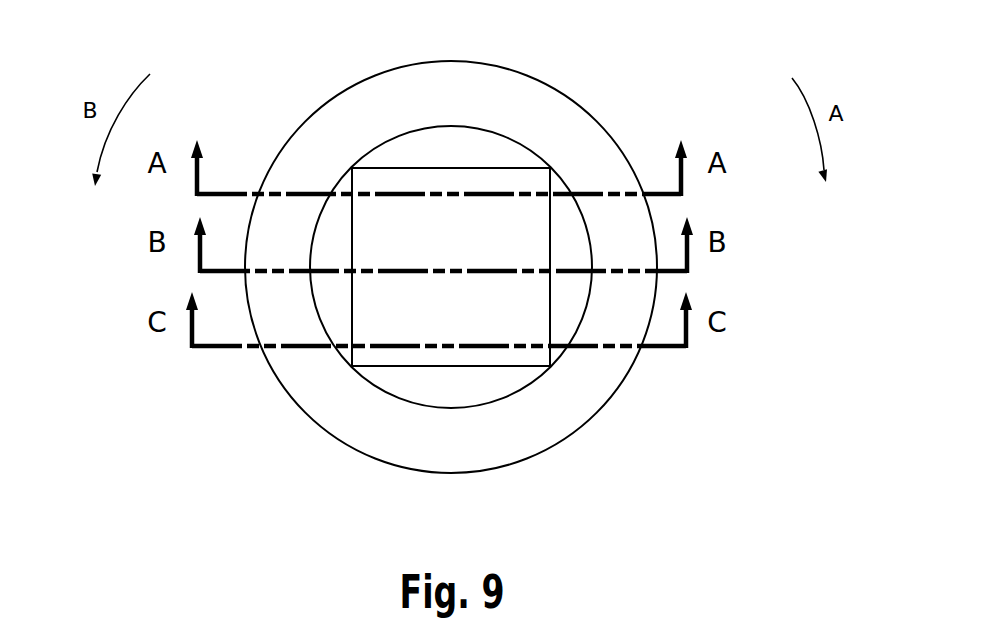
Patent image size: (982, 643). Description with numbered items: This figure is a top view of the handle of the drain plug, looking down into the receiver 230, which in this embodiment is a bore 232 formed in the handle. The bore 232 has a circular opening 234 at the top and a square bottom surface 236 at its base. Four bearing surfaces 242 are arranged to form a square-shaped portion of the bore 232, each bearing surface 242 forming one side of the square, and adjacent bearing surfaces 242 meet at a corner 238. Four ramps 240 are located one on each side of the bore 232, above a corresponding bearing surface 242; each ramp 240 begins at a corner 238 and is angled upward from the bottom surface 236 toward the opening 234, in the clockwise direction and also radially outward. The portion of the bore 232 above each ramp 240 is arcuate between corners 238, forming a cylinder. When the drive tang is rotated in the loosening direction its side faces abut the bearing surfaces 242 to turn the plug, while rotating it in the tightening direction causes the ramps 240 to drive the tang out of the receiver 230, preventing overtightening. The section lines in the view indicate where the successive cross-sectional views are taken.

The receiver 230 is at (428, 88).
The bore 232 is at (383, 172).
The circular opening 234 is at (379, 394).
The square bottom surface 236 is at (427, 244).
The corner 238 is at (352, 168).
The ramp 240 is at (428, 160).
The bearing surface 242 is at (479, 182).